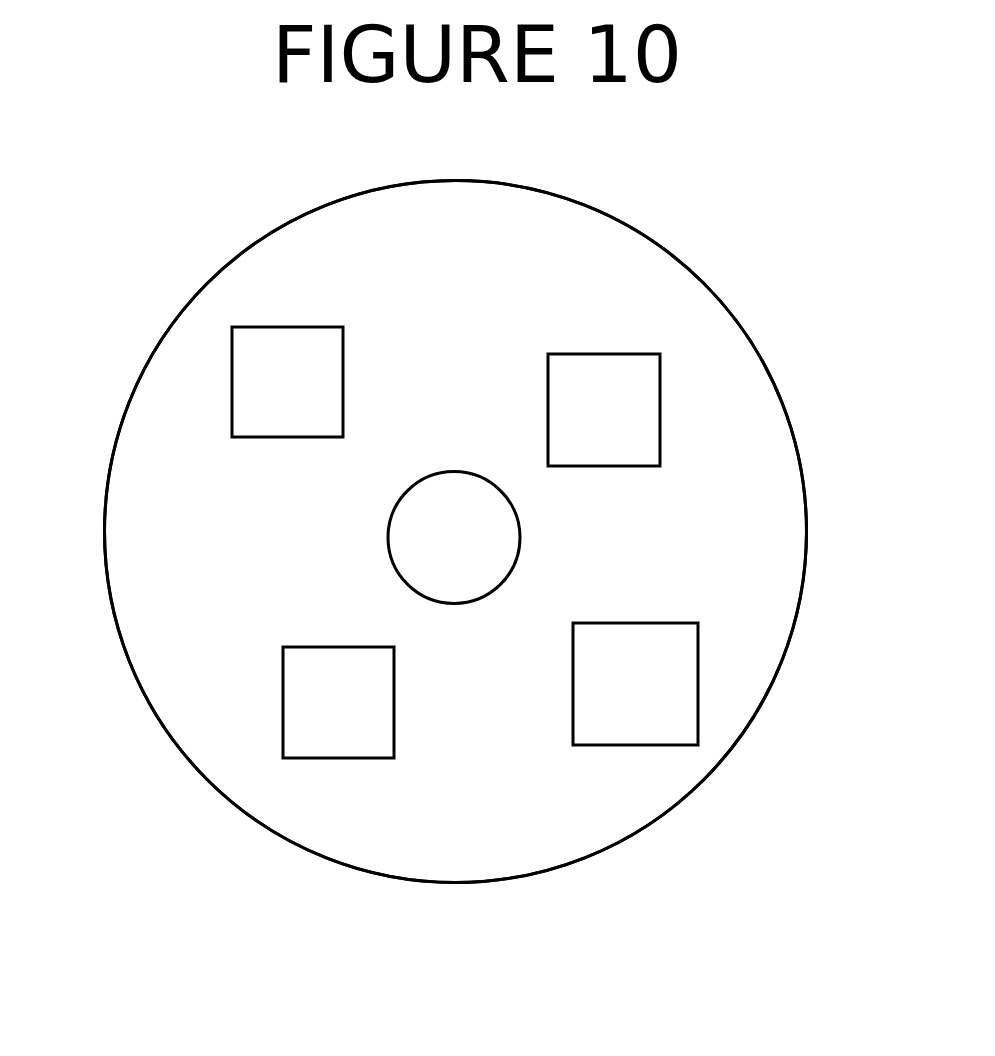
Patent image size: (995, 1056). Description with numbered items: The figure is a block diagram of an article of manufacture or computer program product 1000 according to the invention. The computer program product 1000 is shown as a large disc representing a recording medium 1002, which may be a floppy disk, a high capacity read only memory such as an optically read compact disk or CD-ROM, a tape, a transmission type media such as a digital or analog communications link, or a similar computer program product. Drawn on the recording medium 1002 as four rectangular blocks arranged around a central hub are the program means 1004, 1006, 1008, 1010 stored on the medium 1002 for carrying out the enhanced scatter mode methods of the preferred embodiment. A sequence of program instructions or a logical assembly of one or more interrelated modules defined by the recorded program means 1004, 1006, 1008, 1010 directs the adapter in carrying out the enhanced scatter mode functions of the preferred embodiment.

The computer program product 1000 is at (473, 532).
The recording medium 1002 is at (155, 324).
The program means 1004 is at (604, 410).
The program means 1006 is at (635, 684).
The program means 1008 is at (338, 702).
The program means 1010 is at (287, 382).